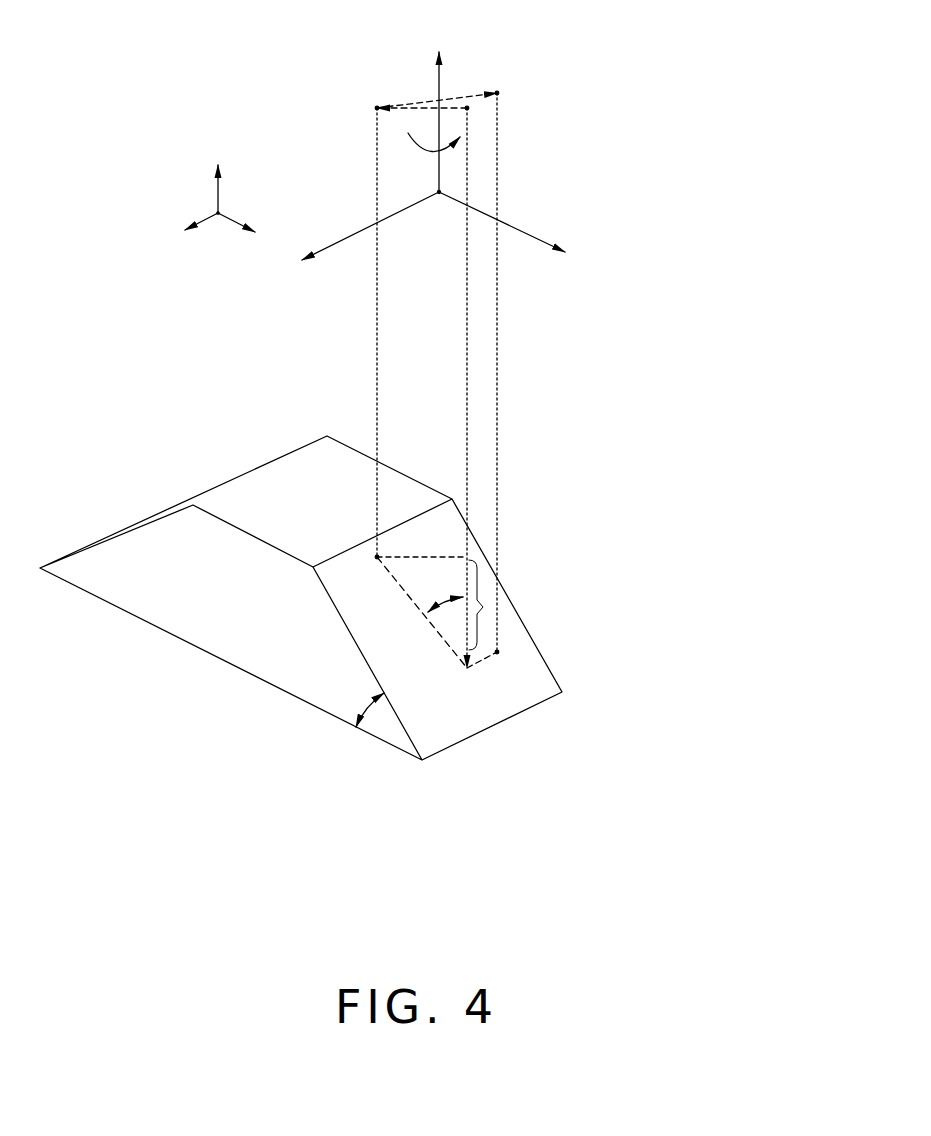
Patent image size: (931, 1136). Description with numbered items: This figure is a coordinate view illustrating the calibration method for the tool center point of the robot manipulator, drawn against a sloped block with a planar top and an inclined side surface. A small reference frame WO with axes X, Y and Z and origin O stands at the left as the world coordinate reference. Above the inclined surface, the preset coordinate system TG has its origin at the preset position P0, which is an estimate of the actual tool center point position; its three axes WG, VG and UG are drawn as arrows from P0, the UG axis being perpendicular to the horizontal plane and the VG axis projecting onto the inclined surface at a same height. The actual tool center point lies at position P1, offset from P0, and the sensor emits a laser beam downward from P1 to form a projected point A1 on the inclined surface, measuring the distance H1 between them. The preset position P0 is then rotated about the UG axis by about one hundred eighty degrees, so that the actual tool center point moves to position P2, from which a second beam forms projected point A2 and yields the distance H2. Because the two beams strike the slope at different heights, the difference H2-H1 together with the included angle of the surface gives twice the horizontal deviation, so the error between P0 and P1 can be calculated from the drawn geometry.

The UG-axis UG is at (431, 102).
The VG-axis VG is at (368, 245).
The WG-axis WG is at (527, 224).
The preset coordinate system TG is at (425, 162).
The preset position P0 is at (445, 211).
The actual position of the TCP P1 is at (417, 108).
The position after rotation P2 is at (489, 111).
The first distance H1 is at (358, 332).
The second distance H2 is at (460, 380).
The first projected point A1 is at (301, 598).
The second projected point A2 is at (498, 669).
The height difference H2-H1 is at (535, 605).
The world coordinate system WO is at (195, 207).
The X axis of world coordinate system X is at (240, 216).
The Y axis of world coordinate system Y is at (191, 230).
The Z axis of world coordinate system Z is at (230, 189).
The origin of world coordinate system O is at (224, 225).